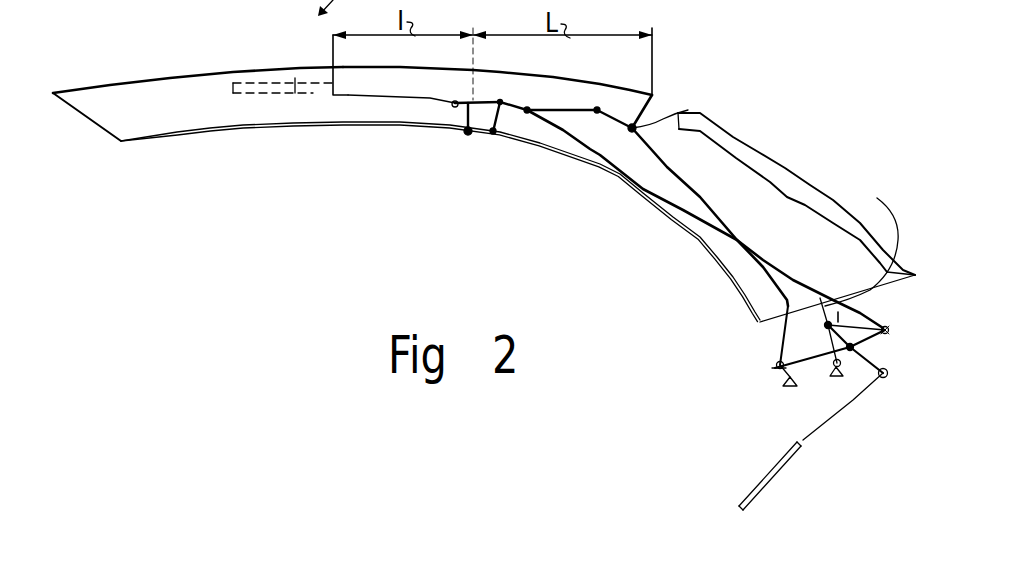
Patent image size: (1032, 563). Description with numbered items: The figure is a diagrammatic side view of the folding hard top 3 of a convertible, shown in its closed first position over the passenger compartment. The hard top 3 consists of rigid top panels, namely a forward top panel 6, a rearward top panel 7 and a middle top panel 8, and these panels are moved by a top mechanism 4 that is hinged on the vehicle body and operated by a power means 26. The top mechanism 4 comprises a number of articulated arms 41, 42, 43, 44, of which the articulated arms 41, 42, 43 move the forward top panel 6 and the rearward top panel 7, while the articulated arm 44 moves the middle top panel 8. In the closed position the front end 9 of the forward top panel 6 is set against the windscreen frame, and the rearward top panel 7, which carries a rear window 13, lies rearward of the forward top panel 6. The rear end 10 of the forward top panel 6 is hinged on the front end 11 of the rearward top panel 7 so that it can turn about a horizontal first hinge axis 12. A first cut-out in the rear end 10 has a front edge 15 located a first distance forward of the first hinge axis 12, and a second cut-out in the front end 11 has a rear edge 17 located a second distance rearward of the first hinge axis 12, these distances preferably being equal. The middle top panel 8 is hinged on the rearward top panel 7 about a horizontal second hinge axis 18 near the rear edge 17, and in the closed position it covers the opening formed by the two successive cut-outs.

The hard top 3 is at (310, 127).
The top mechanism 4 is at (763, 341).
The articulated arm 41 is at (648, 190).
The articulated arm 42 is at (861, 237).
The articulated arm 43 is at (863, 340).
The articulated arm 44 is at (703, 198).
The forward top panel 6 is at (168, 86).
The rearward top panel 7 is at (663, 108).
The middle top panel 8 is at (554, 86).
The front end 9 is at (102, 128).
The rear end 10 is at (497, 134).
The front end 11 is at (488, 105).
The first hinge axis 12 is at (468, 135).
The rear window 13 is at (758, 158).
The front edge 15 is at (337, 83).
The rear edge 17 is at (648, 104).
The second hinge axis 18 is at (688, 110).
The power means 26 is at (752, 488).